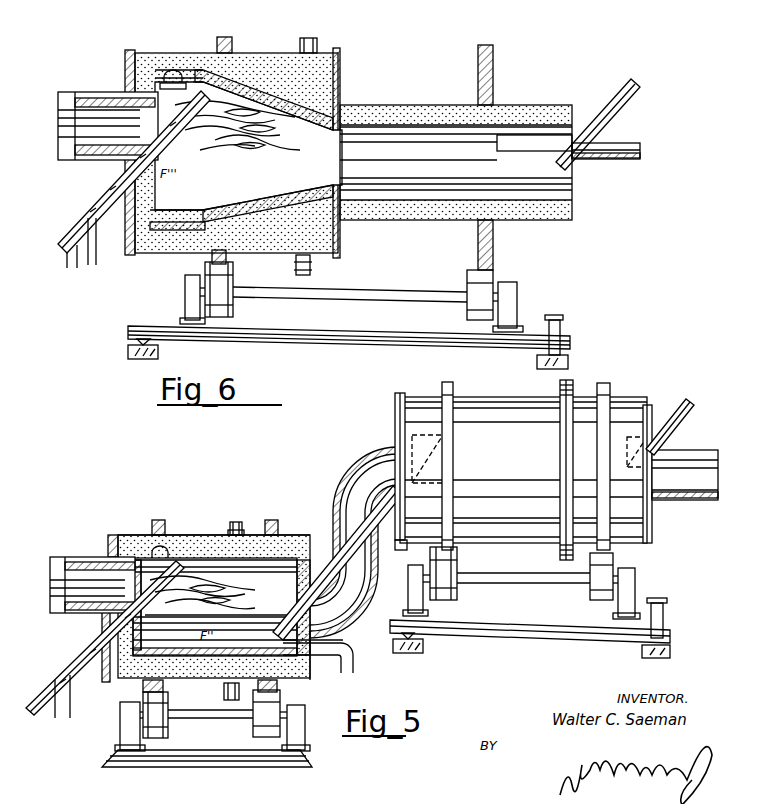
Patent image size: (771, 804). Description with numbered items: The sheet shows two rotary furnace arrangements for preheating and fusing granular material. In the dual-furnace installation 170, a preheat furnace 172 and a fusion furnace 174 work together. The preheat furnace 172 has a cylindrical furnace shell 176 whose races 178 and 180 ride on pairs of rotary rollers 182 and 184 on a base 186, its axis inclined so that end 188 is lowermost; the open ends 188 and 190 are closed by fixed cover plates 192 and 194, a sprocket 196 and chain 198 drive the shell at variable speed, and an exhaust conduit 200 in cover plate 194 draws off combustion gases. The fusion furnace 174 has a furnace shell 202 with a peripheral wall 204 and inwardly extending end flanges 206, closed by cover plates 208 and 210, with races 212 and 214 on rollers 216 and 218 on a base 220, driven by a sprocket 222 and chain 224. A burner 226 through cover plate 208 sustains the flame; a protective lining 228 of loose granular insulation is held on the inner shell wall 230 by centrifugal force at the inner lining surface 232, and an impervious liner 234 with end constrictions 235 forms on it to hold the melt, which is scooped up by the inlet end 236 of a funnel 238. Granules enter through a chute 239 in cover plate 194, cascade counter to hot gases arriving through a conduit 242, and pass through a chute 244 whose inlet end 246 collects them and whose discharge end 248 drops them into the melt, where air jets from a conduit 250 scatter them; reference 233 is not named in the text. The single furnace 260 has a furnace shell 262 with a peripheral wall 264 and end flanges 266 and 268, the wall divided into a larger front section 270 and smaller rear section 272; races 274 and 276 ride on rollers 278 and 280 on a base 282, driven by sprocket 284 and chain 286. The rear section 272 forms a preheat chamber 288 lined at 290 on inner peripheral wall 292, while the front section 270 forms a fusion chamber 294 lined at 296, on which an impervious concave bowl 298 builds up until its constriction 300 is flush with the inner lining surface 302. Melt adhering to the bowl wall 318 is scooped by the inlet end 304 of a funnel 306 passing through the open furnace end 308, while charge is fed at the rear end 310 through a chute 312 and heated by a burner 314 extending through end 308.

In FIG. 5, the furnace installation 170 is at (324, 470).
In FIG. 5, the preheat furnace 172 is at (478, 396).
In FIG. 5, the fusion furnace 174 is at (192, 534).
In FIG. 5, the furnace shell 176 is at (500, 425).
In FIG. 5, the race 178 is at (448, 382).
In FIG. 5, the race 180 is at (607, 385).
In FIG. 5, the rotary rollers 182 is at (458, 590).
In FIG. 5, the rotary rollers 184 is at (593, 588).
In FIG. 5, the base 186 is at (516, 624).
In FIG. 5, the end 188 is at (404, 528).
In FIG. 5, the end 190 is at (650, 530).
In FIG. 5, the cover plate 192 is at (395, 434).
In FIG. 5, the cover plate 194 is at (652, 514).
In FIG. 5, the sprocket 196 is at (555, 456).
In FIG. 5, the chain 198 is at (570, 390).
In FIG. 5, the exhaust conduit 200 is at (692, 462).
In FIG. 5, the furnace shell 202 is at (210, 536).
In FIG. 5, the peripheral wall 204 is at (222, 684).
In FIG. 5, the end flanges 206 is at (140, 683).
In FIG. 5, the cover plate 208 is at (108, 546).
In FIG. 5, the cover plate 210 is at (313, 678).
In FIG. 5, the race 212 is at (158, 520).
In FIG. 5, the race 214 is at (271, 520).
In FIG. 5, the rotary rollers 216 is at (170, 728).
In FIG. 5, the rotary rollers 218 is at (258, 712).
In FIG. 5, the base 220 is at (210, 767).
In FIG. 5, the sprocket 222 is at (243, 530).
In FIG. 5, the chain 224 is at (237, 520).
In FIG. 5, the burner 226 is at (98, 612).
In FIG. 5, the protective lining 228 is at (302, 548).
In FIG. 5, the inner shell wall 230 is at (250, 573).
In FIG. 5, the inner lining surface 232 is at (248, 650).
In FIG. 5, the liner ring 233 is at (221, 632).
In FIG. 5, the impervious liner 234 is at (165, 652).
In FIG. 5, the end constrictions 235 is at (142, 612).
In FIG. 5, the inlet end 236 is at (158, 550).
In FIG. 5, the funnel 238 is at (66, 660).
In FIG. 5, the chute 239 is at (688, 410).
In FIG. 5, the conduit 242 is at (350, 468).
In FIG. 5, the chute 244 is at (357, 527).
In FIG. 5, the inlet end 246 is at (445, 438).
In FIG. 5, the discharge end 248 is at (336, 641).
In FIG. 5, the conduit 250 is at (318, 658).
In FIG. 6, the furnace 260 is at (370, 57).
In FIG. 6, the furnace shell 262 is at (345, 100).
In FIG. 6, the peripheral wall 264 is at (338, 56).
In FIG. 6, the end flange 266 is at (130, 74).
In FIG. 6, the end flange 268 is at (574, 206).
In FIG. 6, the front section 270 is at (275, 70).
In FIG. 6, the rear section 272 is at (428, 115).
In FIG. 6, the race 274 is at (226, 37).
In FIG. 6, the race 276 is at (492, 264).
In FIG. 6, the rotary rollers 278 is at (236, 305).
In FIG. 6, the rotary rollers 280 is at (470, 305).
In FIG. 6, the base 282 is at (348, 334).
In FIG. 6, the sprocket 284 is at (312, 262).
In FIG. 6, the chain 286 is at (312, 272).
In FIG. 6, the preheat chamber 288 is at (386, 138).
In FIG. 6, the lining 290 is at (450, 122).
In FIG. 6, the inner peripheral wall 292 is at (402, 137).
In FIG. 6, the fusion chamber 294 is at (232, 140).
In FIG. 6, the lining 296 is at (308, 37).
In FIG. 6, the impervious concave bowl 298 is at (258, 198).
In FIG. 6, the constriction 300 is at (320, 132).
In FIG. 6, the inner lining surface 302 is at (355, 182).
In FIG. 6, the inlet end 304 is at (176, 76).
In FIG. 6, the funnel 306 is at (106, 200).
In FIG. 6, the open furnace end 308 is at (132, 97).
In FIG. 6, the rear end 310 is at (575, 184).
In FIG. 6, the chute 312 is at (605, 112).
In FIG. 6, the burner 314 is at (78, 158).
In FIG. 6, the bowl wall 318 is at (178, 226).